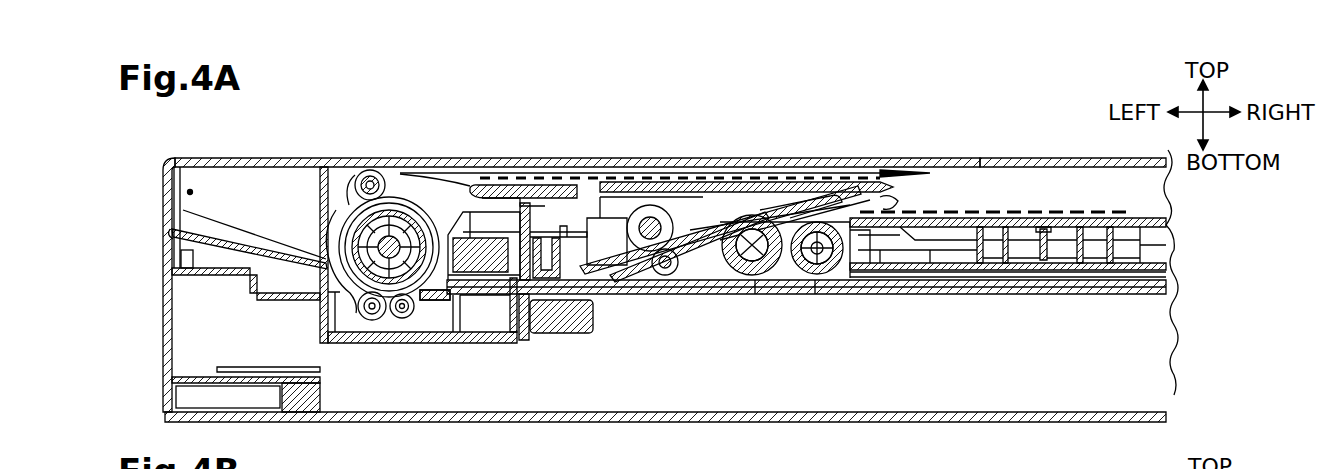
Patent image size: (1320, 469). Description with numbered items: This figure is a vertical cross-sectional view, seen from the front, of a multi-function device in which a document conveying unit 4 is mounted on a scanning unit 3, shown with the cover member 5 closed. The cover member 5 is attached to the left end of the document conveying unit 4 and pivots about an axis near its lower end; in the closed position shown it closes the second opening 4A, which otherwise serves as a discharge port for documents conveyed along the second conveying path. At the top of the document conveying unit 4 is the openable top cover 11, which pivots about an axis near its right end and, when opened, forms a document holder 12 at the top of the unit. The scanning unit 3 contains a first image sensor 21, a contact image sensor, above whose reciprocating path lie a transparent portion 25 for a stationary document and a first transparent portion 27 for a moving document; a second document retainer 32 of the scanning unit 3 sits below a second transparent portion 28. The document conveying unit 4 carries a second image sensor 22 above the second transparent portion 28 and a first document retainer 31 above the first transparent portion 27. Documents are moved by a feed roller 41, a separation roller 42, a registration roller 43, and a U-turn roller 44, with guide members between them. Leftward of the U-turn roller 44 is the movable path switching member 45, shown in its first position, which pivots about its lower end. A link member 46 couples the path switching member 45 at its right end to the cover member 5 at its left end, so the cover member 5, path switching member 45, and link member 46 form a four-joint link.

The scanning unit 3 is at (660, 423).
The document conveying unit 4 is at (661, 158).
The second opening 4A is at (190, 190).
The cover member 5 is at (164, 166).
The top cover 11 is at (1054, 158).
The document holder 12 is at (1140, 217).
The first image sensor 21 is at (564, 334).
The second image sensor 22 is at (487, 233).
The transparent portion for a stationary document 25 is at (703, 296).
The first transparent portion 27 is at (525, 296).
The second transparent portion 28 is at (461, 245).
The first document retainer 31 is at (563, 242).
The second document retainer 32 is at (490, 295).
The feed roller 41 is at (817, 278).
The separation roller 42 is at (757, 278).
The registration roller 43 is at (663, 277).
The U-turn roller 44 is at (396, 194).
The path switching member 45 is at (335, 291).
The link member 46 is at (269, 250).